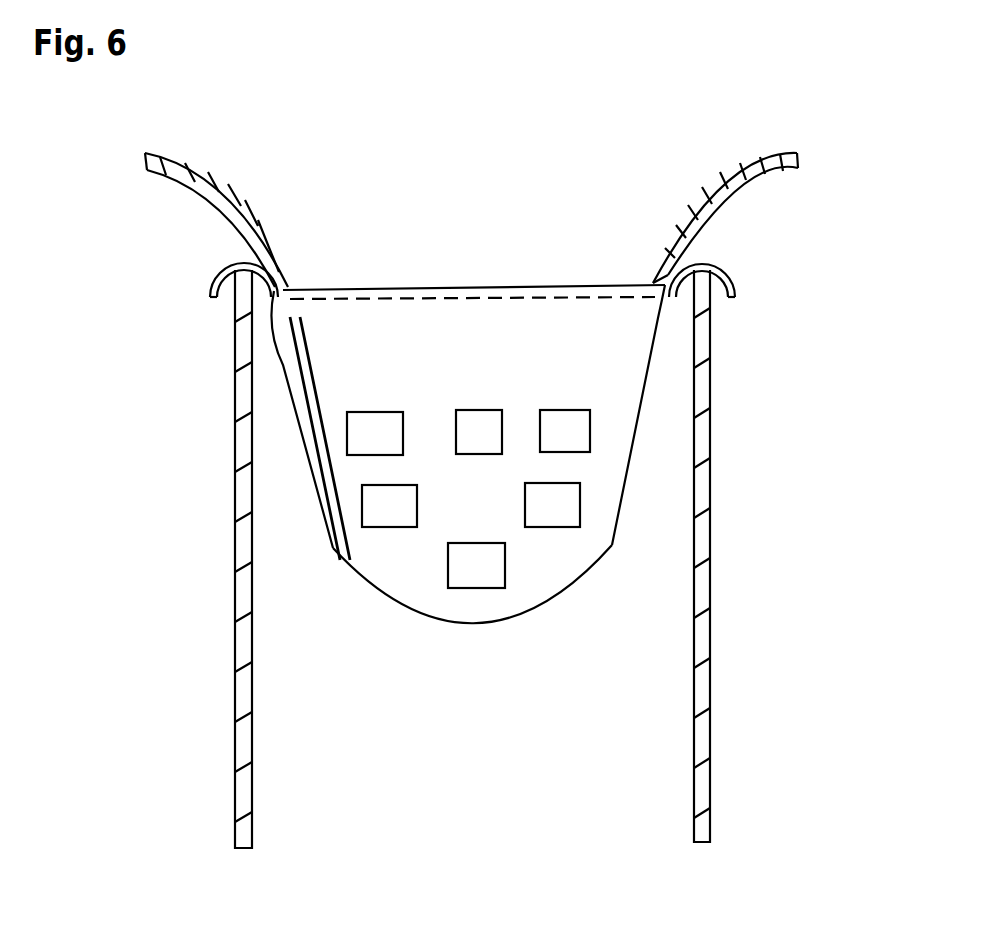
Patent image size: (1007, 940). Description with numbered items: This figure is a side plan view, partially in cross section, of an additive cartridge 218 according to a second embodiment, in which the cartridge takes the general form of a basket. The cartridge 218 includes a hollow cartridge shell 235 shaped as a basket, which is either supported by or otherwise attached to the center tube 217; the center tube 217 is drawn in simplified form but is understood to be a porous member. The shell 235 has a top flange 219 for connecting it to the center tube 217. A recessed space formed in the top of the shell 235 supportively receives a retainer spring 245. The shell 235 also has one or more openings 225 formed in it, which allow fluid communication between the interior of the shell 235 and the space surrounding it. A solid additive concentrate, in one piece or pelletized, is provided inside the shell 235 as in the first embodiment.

The center tube 217 is at (717, 498).
The additive cartridge 218 is at (443, 660).
The top flange 219 is at (230, 270).
The openings 225 is at (578, 510).
The cartridge shell 235 is at (500, 624).
The retainer spring 245 is at (708, 183).